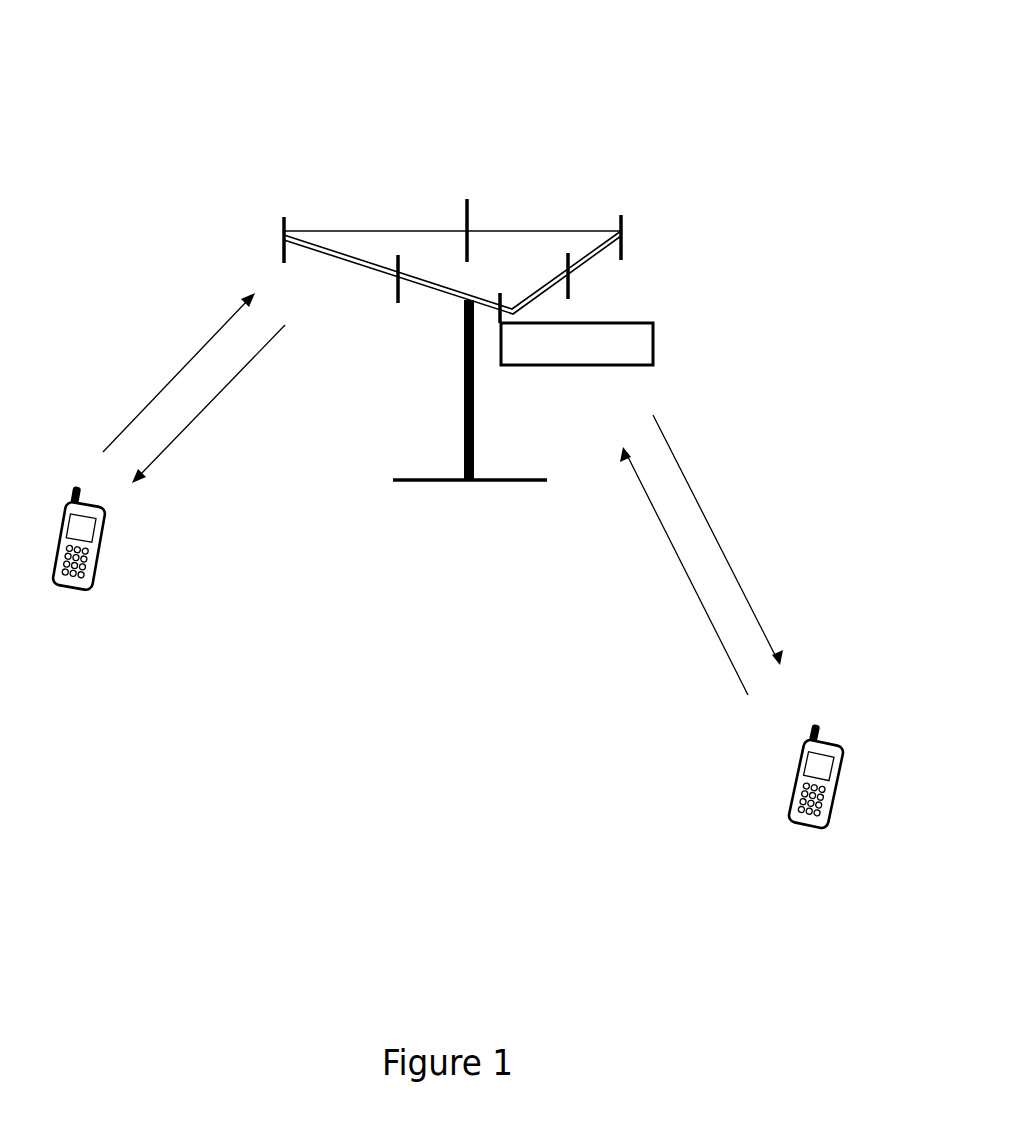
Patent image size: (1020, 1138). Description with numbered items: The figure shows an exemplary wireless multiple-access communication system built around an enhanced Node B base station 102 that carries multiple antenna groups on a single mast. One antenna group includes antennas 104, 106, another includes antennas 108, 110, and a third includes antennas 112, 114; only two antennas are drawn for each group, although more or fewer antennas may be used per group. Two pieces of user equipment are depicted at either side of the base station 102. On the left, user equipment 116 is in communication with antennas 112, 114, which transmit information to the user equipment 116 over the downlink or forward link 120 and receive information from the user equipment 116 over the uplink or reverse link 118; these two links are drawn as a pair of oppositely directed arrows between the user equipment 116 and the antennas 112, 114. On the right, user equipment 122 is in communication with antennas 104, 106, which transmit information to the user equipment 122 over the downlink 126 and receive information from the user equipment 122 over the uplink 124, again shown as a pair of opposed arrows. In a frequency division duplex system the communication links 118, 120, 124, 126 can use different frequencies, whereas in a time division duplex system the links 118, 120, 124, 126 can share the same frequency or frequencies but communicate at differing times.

The enhanced Node B (eNB) base station 102 is at (452, 392).
The antenna 104 is at (577, 344).
The antenna 106 is at (627, 280).
The antenna 108 is at (677, 237).
The antenna 110 is at (519, 201).
The antenna 112 is at (242, 211).
The antenna 114 is at (350, 311).
The user equipment (UE) 116 is at (117, 562).
The uplink (reverse link) 118 is at (171, 372).
The downlink (forward link) 120 is at (208, 419).
The user equipment (UE) 122 is at (774, 802).
The uplink 124 is at (662, 571).
The downlink 126 is at (725, 540).